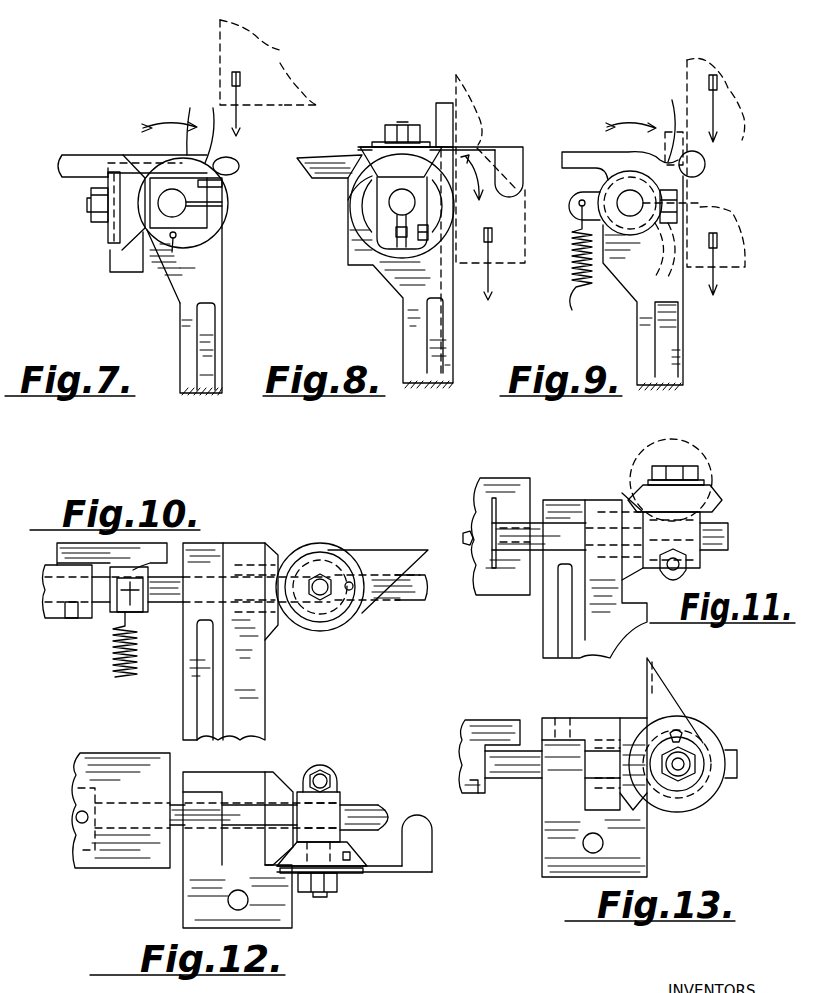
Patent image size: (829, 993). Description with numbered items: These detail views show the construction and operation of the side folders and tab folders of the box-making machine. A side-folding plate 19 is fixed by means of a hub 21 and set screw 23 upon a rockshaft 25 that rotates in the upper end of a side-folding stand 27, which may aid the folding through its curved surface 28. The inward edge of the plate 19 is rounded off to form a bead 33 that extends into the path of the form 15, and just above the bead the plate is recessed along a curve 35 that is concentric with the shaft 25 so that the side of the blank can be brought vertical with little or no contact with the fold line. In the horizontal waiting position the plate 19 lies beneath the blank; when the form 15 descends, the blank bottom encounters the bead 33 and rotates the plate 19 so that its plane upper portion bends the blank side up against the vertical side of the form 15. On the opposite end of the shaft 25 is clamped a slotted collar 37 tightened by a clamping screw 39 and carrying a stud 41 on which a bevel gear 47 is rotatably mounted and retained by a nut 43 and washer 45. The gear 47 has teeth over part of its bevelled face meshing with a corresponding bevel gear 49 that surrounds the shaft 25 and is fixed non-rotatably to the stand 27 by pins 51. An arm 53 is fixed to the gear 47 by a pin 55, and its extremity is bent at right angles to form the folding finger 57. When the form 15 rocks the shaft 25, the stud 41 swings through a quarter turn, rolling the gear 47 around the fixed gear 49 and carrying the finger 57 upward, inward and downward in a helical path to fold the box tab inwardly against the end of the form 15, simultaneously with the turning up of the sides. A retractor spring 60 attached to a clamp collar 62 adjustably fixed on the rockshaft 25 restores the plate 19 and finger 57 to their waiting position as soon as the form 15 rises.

In FIG. 7, the form 15 is at (284, 53).
In FIG. 8, the form 15 is at (288, 60).
In FIG. 9, the form 15 is at (692, 60).
In FIG. 7, the plate 19 is at (76, 155).
In FIG. 8, the plate 19 is at (436, 115).
In FIG. 9, the plate 19 is at (574, 152).
In FIG. 10, the plate 19 is at (68, 540).
In FIG. 11, the plate 19 is at (517, 480).
In FIG. 12, the plate 19 is at (115, 753).
In FIG. 13, the plate 19 is at (465, 740).
In FIG. 10, the hub 21 is at (45, 612).
In FIG. 11, the hub 21 is at (506, 542).
In FIG. 12, the hub 21 is at (76, 818).
In FIG. 13, the hub 21 is at (468, 799).
In FIG. 10, the set screw 23 is at (73, 618).
In FIG. 11, the set screw 23 is at (468, 538).
In FIG. 7, the rockshaft 25 is at (190, 203).
In FIG. 8, the rockshaft 25 is at (402, 218).
In FIG. 9, the rockshaft 25 is at (630, 203).
In FIG. 10, the rockshaft 25 is at (159, 605).
In FIG. 11, the rockshaft 25 is at (536, 525).
In FIG. 12, the rockshaft 25 is at (279, 816).
In FIG. 13, the rockshaft 25 is at (737, 753).
In FIG. 7, the side-folding stand 27 is at (222, 316).
In FIG. 8, the side-folding stand 27 is at (405, 330).
In FIG. 9, the side-folding stand 27 is at (640, 326).
In FIG. 10, the side-folding stand 27 is at (255, 645).
In FIG. 11, the side-folding stand 27 is at (595, 579).
In FIG. 13, the side-folding stand 27 is at (594, 797).
In FIG. 9, the curved surface 28 is at (680, 203).
In FIG. 7, the bead 33 is at (239, 170).
In FIG. 8, the bead 33 is at (318, 186).
In FIG. 9, the bead 33 is at (703, 168).
In FIG. 7, the recess 35 is at (205, 131).
In FIG. 9, the recess 35 is at (666, 128).
In FIG. 7, the collar 37 is at (195, 222).
In FIG. 8, the collar 37 is at (395, 238).
In FIG. 12, the collar 37 is at (338, 795).
In FIG. 7, the clamping screw 39 is at (222, 186).
In FIG. 8, the clamping screw 39 is at (449, 223).
In FIG. 12, the clamping screw 39 is at (323, 775).
In FIG. 7, the stud 41 is at (122, 238).
In FIG. 8, the stud 41 is at (368, 160).
In FIG. 10, the stud 41 is at (322, 580).
In FIG. 11, the stud 41 is at (700, 488).
In FIG. 12, the stud 41 is at (322, 893).
In FIG. 13, the stud 41 is at (678, 764).
In FIG. 8, the nut 43 is at (398, 124).
In FIG. 12, the nut 43 is at (337, 890).
In FIG. 8, the washer 45 is at (376, 142).
In FIG. 12, the washer 45 is at (350, 876).
In FIG. 7, the bevel gear 47 is at (165, 250).
In FIG. 8, the bevel gear 47 is at (360, 184).
In FIG. 10, the bevel gear 47 is at (345, 622).
In FIG. 11, the bevel gear 47 is at (712, 490).
In FIG. 12, the bevel gear 47 is at (352, 866).
In FIG. 13, the bevel gear 47 is at (706, 730).
In FIG. 7, the bevel gear 49 is at (196, 238).
In FIG. 8, the bevel gear 49 is at (351, 216).
In FIG. 10, the bevel gear 49 is at (290, 556).
In FIG. 11, the bevel gear 49 is at (643, 584).
In FIG. 12, the bevel gear 49 is at (284, 772).
In FIG. 13, the bevel gear 49 is at (638, 725).
In FIG. 7, the pin 51 is at (168, 248).
In FIG. 10, the pin 51 is at (240, 612).
In FIG. 11, the pin 51 is at (598, 557).
In FIG. 7, the arm 53 is at (108, 232).
In FIG. 8, the arm 53 is at (470, 147).
In FIG. 10, the arm 53 is at (365, 548).
In FIG. 12, the arm 53 is at (405, 876).
In FIG. 13, the arm 53 is at (678, 700).
In FIG. 10, the pin 55 is at (353, 590).
In FIG. 12, the pin 55 is at (352, 852).
In FIG. 13, the pin 55 is at (677, 733).
In FIG. 7, the folding finger 57 is at (177, 127).
In FIG. 8, the folding finger 57 is at (523, 185).
In FIG. 9, the folding finger 57 is at (570, 206).
In FIG. 11, the folding finger 57 is at (671, 480).
In FIG. 12, the folding finger 57 is at (428, 834).
In FIG. 13, the folding finger 57 is at (440, 832).
In FIG. 9, the retractor spring 60 is at (581, 264).
In FIG. 10, the retractor spring 60 is at (113, 665).
In FIG. 9, the clamp collar 62 is at (695, 207).
In FIG. 10, the clamp collar 62 is at (170, 545).